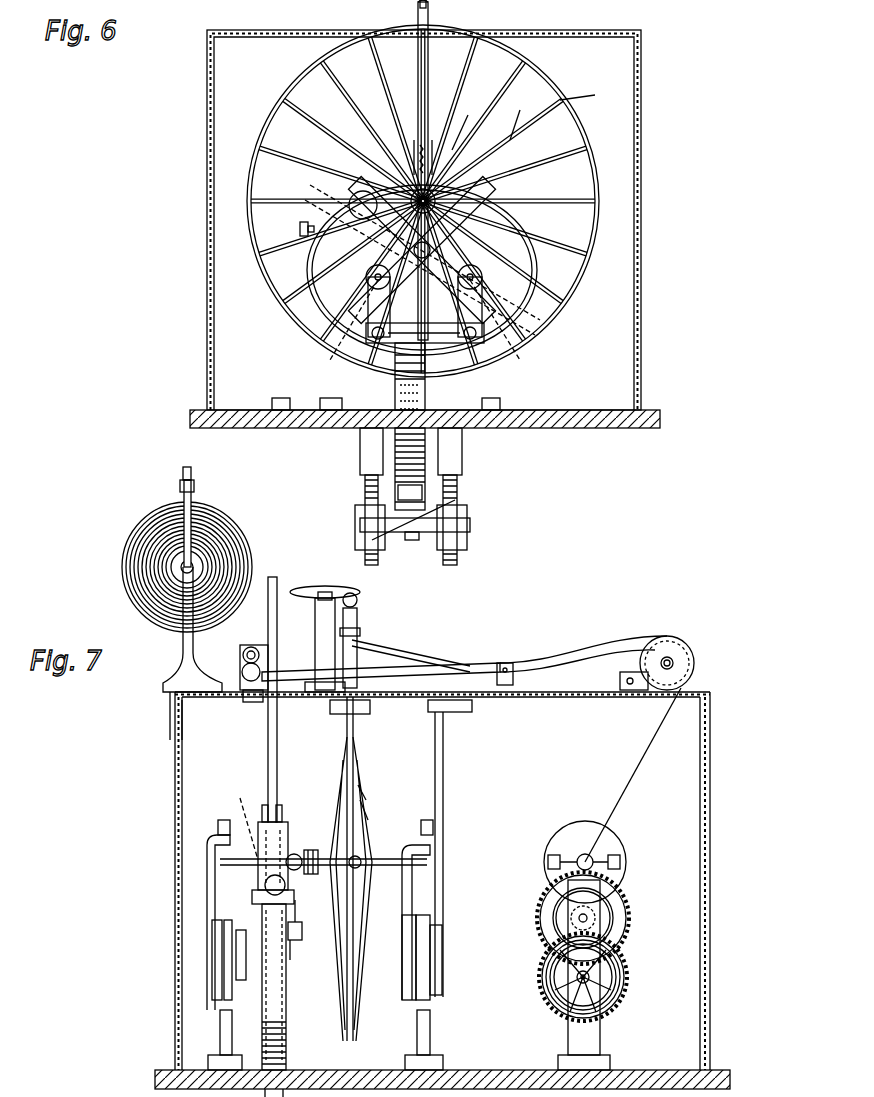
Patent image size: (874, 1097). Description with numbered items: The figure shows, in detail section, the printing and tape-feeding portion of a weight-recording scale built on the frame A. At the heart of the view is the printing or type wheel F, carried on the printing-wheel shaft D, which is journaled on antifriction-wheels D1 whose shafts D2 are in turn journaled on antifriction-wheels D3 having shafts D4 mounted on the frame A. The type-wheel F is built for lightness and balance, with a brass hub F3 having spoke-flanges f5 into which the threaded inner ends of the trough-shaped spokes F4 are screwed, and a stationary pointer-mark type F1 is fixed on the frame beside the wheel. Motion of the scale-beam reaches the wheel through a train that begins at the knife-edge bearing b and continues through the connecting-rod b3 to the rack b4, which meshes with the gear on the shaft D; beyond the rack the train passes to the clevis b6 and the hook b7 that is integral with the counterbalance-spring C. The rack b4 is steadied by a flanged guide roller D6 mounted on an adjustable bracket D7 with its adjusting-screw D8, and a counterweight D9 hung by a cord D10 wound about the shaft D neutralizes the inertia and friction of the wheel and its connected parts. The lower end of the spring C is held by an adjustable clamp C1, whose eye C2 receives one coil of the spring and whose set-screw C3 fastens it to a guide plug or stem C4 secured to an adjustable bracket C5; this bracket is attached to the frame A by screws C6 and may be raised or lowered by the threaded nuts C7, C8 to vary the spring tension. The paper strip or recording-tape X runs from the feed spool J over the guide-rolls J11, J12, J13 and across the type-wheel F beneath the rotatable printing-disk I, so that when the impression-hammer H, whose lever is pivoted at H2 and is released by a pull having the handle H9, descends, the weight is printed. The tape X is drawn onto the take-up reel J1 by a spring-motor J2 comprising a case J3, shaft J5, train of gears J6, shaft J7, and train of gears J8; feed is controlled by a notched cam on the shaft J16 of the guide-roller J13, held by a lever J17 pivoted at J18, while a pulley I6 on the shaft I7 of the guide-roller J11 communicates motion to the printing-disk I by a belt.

In FIG. 6, the frame A is at (480, 357).
In FIG. 7, the frame A is at (432, 1008).
In FIG. 6, the printing or type wheel F is at (525, 58).
In FIG. 7, the printing or type wheel F is at (360, 742).
In FIG. 6, the stationary pointer-mark type F1 is at (585, 84).
In FIG. 6, the spokes F4 is at (522, 115).
In FIG. 7, the spokes F4 is at (378, 796).
In FIG. 7, the brass hub F3 is at (372, 818).
In FIG. 6, the spoke-flanges f5 is at (465, 121).
In FIG. 7, the spoke-flanges f5 is at (365, 870).
In FIG. 6, the knife-edge bearing b is at (408, 150).
In FIG. 6, the connecting-rod b3 is at (428, 8).
In FIG. 7, the connecting-rod b3 is at (278, 578).
In FIG. 6, the rack b4 is at (394, 130).
In FIG. 7, the rack b4 is at (282, 812).
In FIG. 6, the clevis b6 is at (395, 360).
In FIG. 6, the hook b7 is at (428, 385).
In FIG. 7, the hook b7 is at (290, 1025).
In FIG. 6, the printing-wheel shaft D is at (500, 262).
In FIG. 7, the printing-wheel shaft D is at (205, 885).
In FIG. 6, the antifriction-wheels D1 is at (520, 210).
In FIG. 7, the antifriction-wheels D1 is at (470, 872).
In FIG. 7, the shafts of antifriction-wheels D2 is at (212, 895).
In FIG. 6, the antifriction-wheels D3 is at (372, 290).
In FIG. 7, the antifriction-wheels D3 is at (230, 950).
In FIG. 6, the shafts D4 is at (488, 320).
In FIG. 7, the shafts D4 is at (468, 928).
In FIG. 6, the flanged guide wheel or roller D6 is at (350, 195).
In FIG. 7, the flanged guide wheel or roller D6 is at (246, 820).
In FIG. 7, the adjustable bracket D7 is at (292, 832).
In FIG. 6, the adjusting-screw D8 is at (300, 229).
In FIG. 7, the adjusting-screw D8 is at (318, 975).
In FIG. 7, the counterweight D9 is at (305, 969).
In FIG. 7, the cord D10 is at (294, 905).
In FIG. 6, the counterbalance-spring C is at (425, 448).
In FIG. 6, the adjustable clamp C1 is at (360, 525).
In FIG. 6, the eye C2 is at (395, 482).
In FIG. 6, the set-screw C3 is at (422, 492).
In FIG. 6, the guide plug or stem C4 is at (470, 510).
In FIG. 6, the adjustable bracket C5 is at (467, 525).
In FIG. 6, the screws C6 is at (457, 556).
In FIG. 6, the threaded nut C7 is at (365, 512).
In FIG. 6, the threaded nut C8 is at (430, 545).
In FIG. 7, the feed reel or spool J is at (125, 549).
In FIG. 7, the take-up reel J1 is at (615, 916).
In FIG. 7, the spring-motor J2 is at (610, 1000).
In FIG. 7, the case or frame J3 is at (627, 870).
In FIG. 7, the shaft J5 is at (592, 925).
In FIG. 7, the train of gears J6 is at (630, 900).
In FIG. 7, the shaft J7 is at (592, 977).
In FIG. 7, the train of gears J8 is at (610, 1000).
In FIG. 7, the guide-roll J11 is at (243, 658).
In FIG. 7, the guide-roll J12 is at (610, 645).
In FIG. 7, the guide-roller J13 is at (688, 650).
In FIG. 7, the shaft J16 is at (675, 663).
In FIG. 7, the lever J17 is at (365, 645).
In FIG. 7, the pivot J18 is at (508, 662).
In FIG. 7, the rotatable printing-disk I is at (325, 605).
In FIG. 7, the pulley I6 is at (242, 676).
In FIG. 7, the shaft of guide-roller I7 is at (250, 702).
In FIG. 7, the impression-hammer H is at (358, 612).
In FIG. 7, the pivot H2 is at (410, 655).
In FIG. 7, the handle H9 is at (360, 598).
In FIG. 7, the paper strip or recording-tape X is at (655, 745).